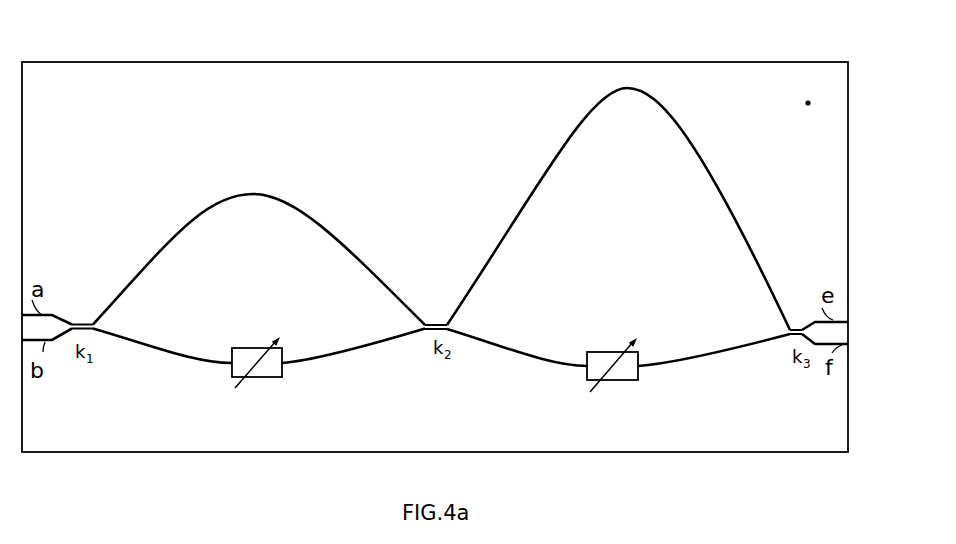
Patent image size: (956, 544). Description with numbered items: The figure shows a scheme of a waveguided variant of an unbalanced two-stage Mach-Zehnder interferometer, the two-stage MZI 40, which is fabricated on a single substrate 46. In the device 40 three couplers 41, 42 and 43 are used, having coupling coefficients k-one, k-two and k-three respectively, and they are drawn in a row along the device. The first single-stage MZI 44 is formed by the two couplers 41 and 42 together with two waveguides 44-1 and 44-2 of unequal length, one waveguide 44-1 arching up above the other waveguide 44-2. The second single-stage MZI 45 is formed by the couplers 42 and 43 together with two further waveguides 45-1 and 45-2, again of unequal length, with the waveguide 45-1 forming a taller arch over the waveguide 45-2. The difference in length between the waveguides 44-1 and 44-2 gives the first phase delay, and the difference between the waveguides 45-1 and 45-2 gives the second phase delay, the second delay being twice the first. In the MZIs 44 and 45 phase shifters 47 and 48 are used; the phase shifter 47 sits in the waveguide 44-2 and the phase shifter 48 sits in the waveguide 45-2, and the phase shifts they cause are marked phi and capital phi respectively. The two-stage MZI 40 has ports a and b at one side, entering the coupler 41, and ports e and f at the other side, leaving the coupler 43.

The two-stage MZI 40 is at (84, 42).
The coupler 41 is at (82, 304).
The coupler 42 is at (445, 327).
The coupler 43 is at (797, 330).
The first single-stage MZI 44 is at (259, 270).
The waveguide 44-1 is at (123, 290).
The waveguide 44-2 is at (182, 357).
The second single-stage MZI 45 is at (615, 252).
The waveguide 45-1 is at (488, 257).
The waveguide 45-2 is at (540, 358).
The substrate 46 is at (808, 103).
The phase shifter 47 is at (260, 380).
The phase shifter 48 is at (617, 382).